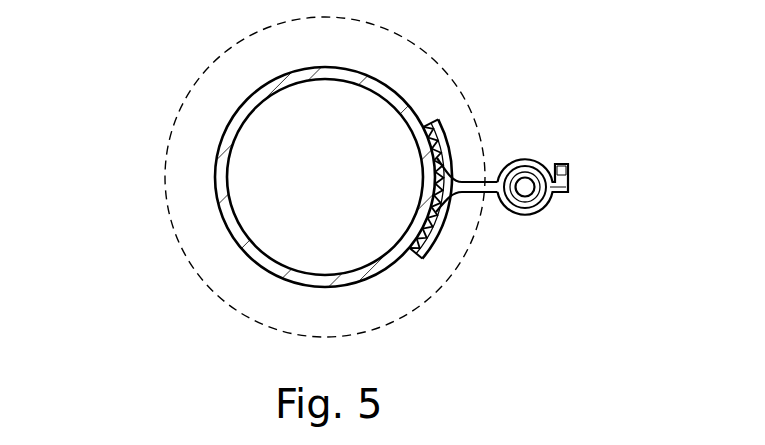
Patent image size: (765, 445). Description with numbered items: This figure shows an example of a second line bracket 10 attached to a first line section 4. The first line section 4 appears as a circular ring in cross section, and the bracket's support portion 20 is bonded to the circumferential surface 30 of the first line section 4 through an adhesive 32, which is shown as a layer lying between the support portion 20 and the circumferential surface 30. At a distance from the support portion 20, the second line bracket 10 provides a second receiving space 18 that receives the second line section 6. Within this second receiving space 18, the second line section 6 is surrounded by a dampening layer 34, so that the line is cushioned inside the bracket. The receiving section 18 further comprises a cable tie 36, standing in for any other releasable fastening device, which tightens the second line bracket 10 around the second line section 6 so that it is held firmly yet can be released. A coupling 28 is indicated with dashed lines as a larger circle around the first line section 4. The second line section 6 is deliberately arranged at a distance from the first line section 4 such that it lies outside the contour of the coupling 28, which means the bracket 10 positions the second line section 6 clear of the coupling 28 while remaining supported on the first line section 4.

The first line section 4 is at (258, 255).
The second line section 6 is at (547, 213).
The second line bracket 10 is at (469, 169).
The second receiving space 18 is at (527, 165).
The support portion 20 is at (441, 217).
The coupling 28 is at (180, 243).
The circumferential surface 30 is at (392, 82).
The adhesive 32 is at (433, 150).
The dampening layer 34 is at (502, 218).
The cable tie 36 is at (570, 192).